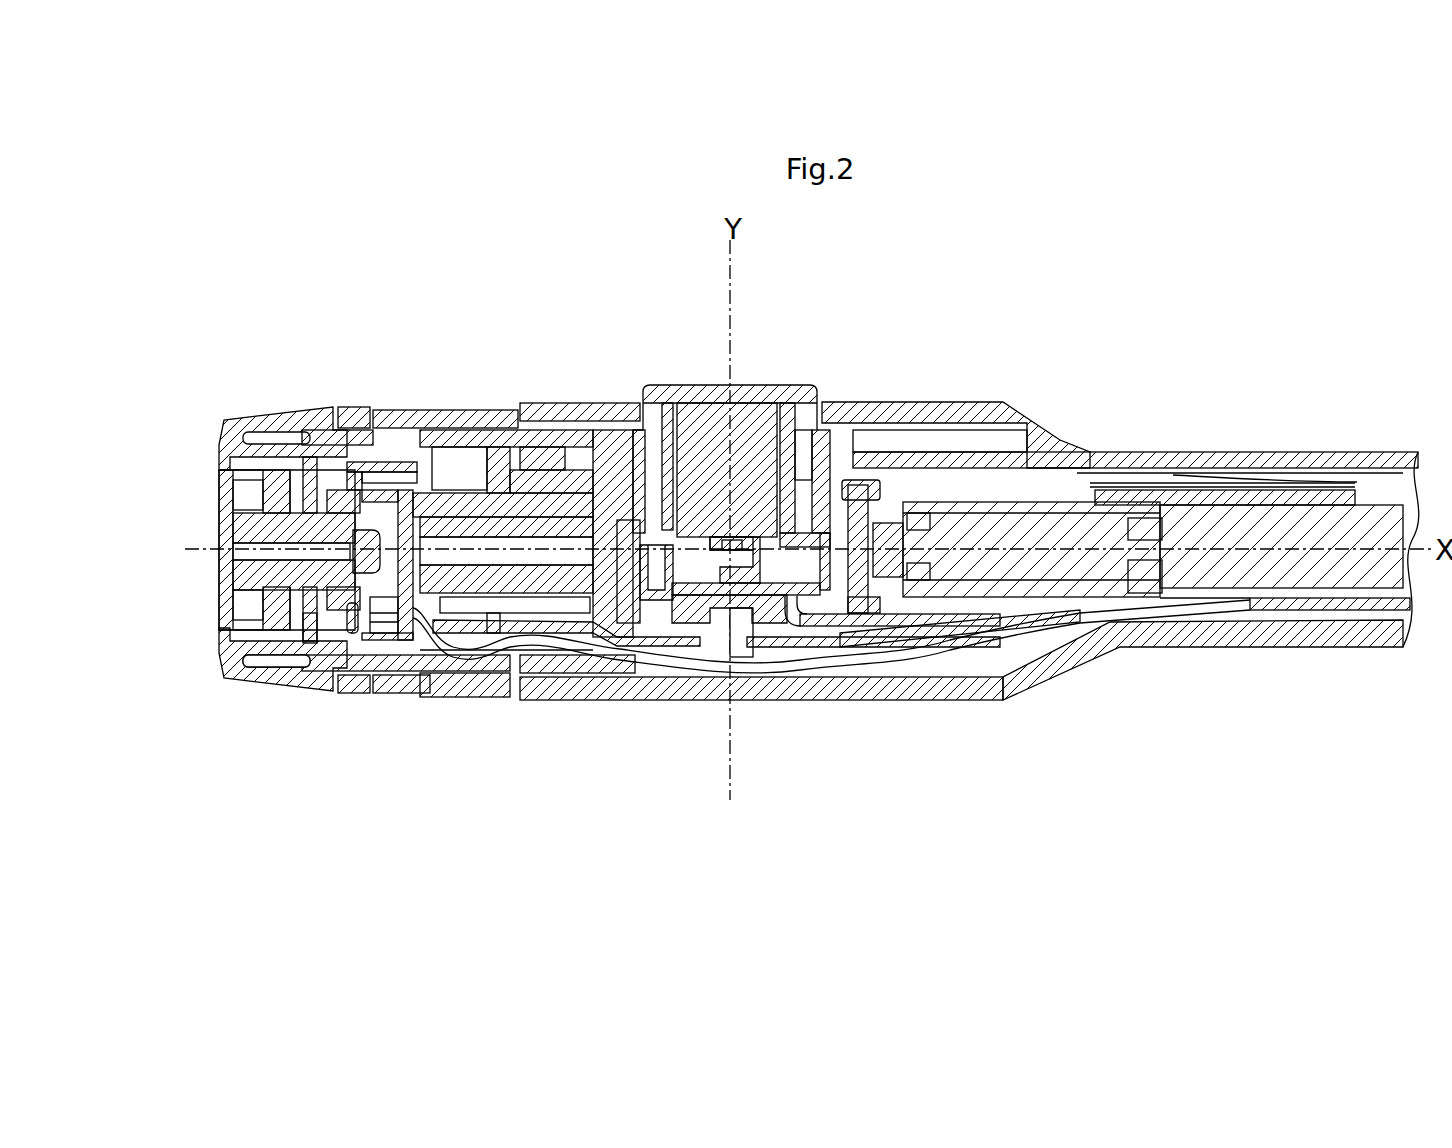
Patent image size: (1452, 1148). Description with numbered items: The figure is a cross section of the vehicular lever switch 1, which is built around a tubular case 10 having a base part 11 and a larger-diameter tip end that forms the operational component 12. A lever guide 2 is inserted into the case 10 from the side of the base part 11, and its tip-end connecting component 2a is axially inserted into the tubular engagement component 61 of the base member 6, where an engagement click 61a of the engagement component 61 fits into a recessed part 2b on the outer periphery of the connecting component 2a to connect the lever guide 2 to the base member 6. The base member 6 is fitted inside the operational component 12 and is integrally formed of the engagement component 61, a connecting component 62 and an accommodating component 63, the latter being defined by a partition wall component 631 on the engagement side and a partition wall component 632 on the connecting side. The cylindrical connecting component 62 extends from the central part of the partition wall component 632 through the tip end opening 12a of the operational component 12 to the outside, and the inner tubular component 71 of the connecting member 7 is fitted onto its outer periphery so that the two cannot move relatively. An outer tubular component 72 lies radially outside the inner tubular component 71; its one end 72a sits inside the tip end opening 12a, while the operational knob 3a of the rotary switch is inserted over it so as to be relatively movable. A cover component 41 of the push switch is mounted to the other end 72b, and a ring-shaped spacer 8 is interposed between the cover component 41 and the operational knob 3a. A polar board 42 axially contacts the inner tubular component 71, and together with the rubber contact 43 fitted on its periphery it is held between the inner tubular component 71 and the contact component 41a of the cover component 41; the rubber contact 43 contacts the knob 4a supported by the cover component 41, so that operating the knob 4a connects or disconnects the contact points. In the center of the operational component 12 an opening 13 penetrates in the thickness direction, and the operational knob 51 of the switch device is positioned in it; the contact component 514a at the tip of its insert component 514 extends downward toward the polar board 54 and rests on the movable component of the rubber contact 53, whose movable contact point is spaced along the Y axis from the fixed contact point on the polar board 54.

The vehicular lever switch 1 is at (1066, 308).
The lever guide 2 is at (1285, 570).
The connecting component 2a is at (1035, 635).
The recessed part 2b is at (912, 525).
The operational knob 3a is at (463, 697).
The knob 4a is at (230, 532).
The base member 6 is at (670, 590).
The connecting member 7 is at (400, 672).
The spacer 8 is at (350, 688).
The case 10 is at (1266, 452).
The base part 11 is at (1155, 452).
The operational component 12 is at (918, 402).
The tip end opening 12a is at (530, 430).
The opening 13 is at (808, 440).
The cover component 41 is at (270, 685).
The contact component 41a is at (365, 478).
The polar board 42 is at (395, 492).
The rubber contact 43 is at (383, 462).
The operational knob 51 is at (750, 385).
The rubber contact 53 is at (812, 535).
The polar board 54 is at (722, 600).
The engagement component 61 is at (968, 590).
The engagement click 61a is at (905, 580).
The connecting component 62 is at (498, 530).
The accommodating component 63 is at (780, 610).
The inner tubular component 71 is at (458, 490).
The outer tubular component 72 is at (438, 690).
The one end 72a is at (535, 692).
The other end 72b is at (320, 690).
The insert component 514 is at (705, 440).
The contact component 514a is at (735, 540).
The partition wall component 631 is at (852, 590).
The partition wall component 632 is at (614, 460).